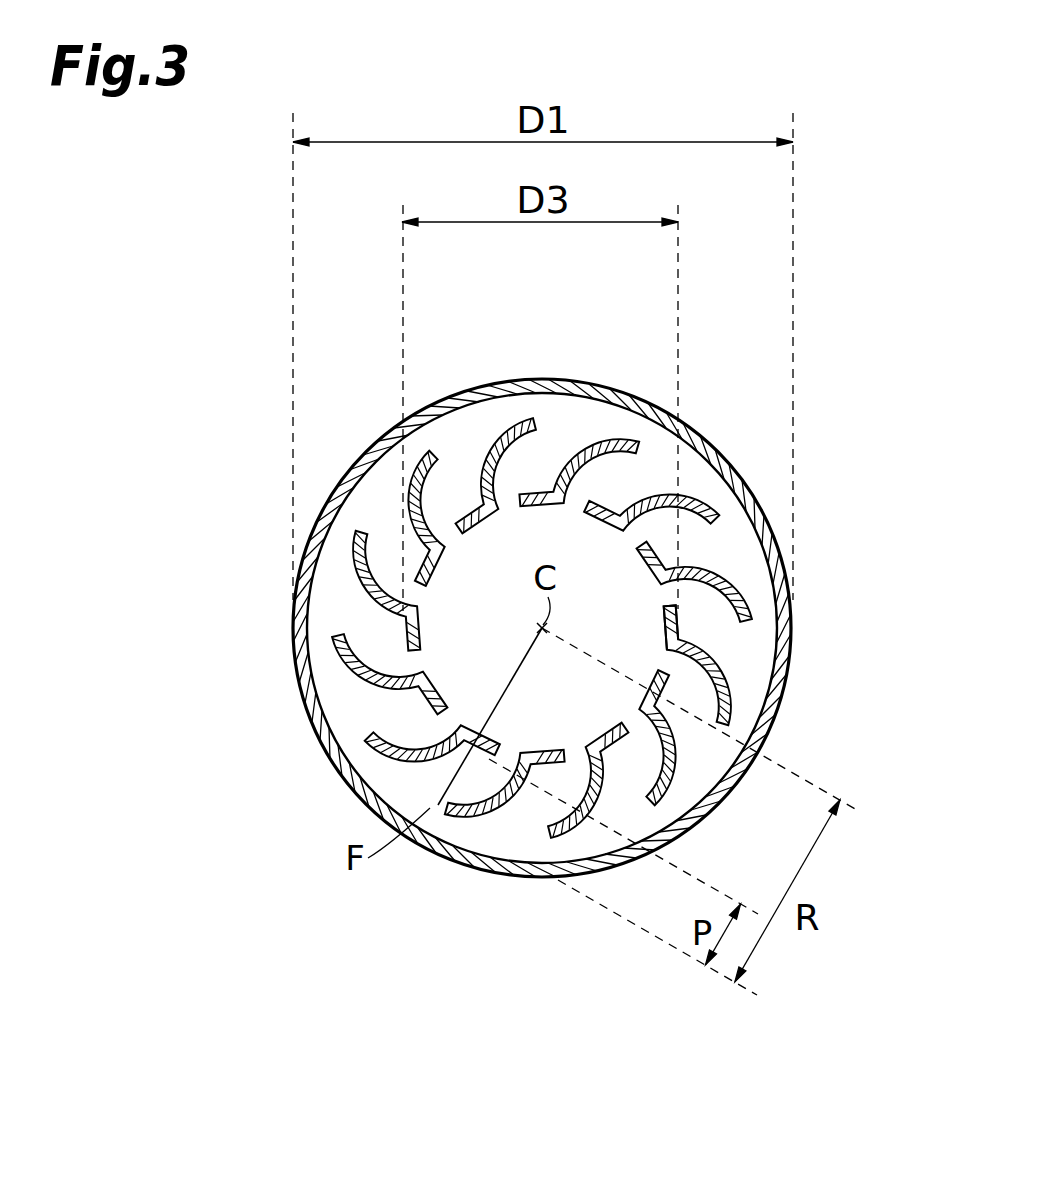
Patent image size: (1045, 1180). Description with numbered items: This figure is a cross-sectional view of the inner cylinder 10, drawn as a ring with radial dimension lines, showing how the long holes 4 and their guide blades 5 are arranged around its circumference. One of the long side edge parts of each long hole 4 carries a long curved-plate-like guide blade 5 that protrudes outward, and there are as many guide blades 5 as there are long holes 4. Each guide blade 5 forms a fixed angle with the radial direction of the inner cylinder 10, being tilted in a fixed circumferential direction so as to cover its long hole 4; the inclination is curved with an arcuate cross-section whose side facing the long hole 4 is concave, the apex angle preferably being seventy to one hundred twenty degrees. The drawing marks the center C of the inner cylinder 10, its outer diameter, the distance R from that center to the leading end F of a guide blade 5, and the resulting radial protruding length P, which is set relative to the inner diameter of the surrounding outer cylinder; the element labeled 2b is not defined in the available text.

The tube wall 2b is at (334, 478).
The long hole 4 is at (489, 565).
The guide blade 5 is at (500, 437).
The inner cylinder 10 is at (680, 634).